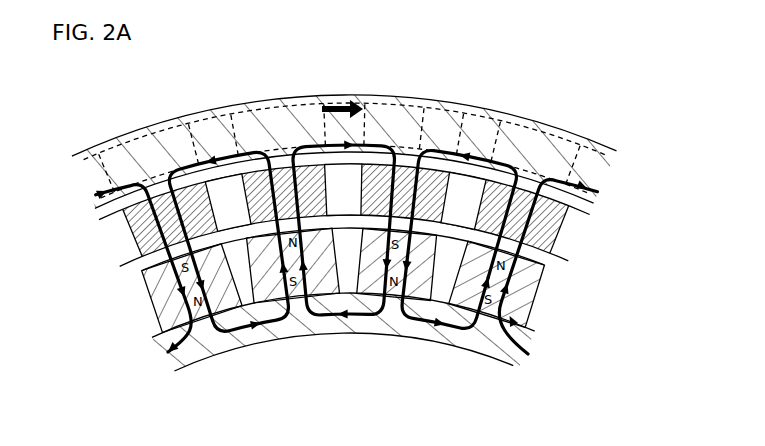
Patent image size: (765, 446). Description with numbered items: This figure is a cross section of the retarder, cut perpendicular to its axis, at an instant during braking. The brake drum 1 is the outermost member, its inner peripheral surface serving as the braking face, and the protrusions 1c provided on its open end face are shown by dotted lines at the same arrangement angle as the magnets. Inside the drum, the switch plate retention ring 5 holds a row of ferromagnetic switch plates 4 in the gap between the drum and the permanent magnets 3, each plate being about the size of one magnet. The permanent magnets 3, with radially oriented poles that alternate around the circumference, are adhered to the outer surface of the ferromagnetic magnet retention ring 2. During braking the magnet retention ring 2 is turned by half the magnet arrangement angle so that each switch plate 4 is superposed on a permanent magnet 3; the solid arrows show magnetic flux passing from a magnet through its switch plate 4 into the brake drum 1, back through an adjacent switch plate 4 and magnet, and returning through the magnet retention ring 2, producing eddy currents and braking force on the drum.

The brake drum 1 is at (612, 144).
The protrusions 1c is at (248, 101).
The magnet retention ring 2 is at (400, 328).
The permanent magnets 3 is at (157, 295).
The switch plates 4 is at (133, 234).
The switch plate retention ring 5 is at (560, 262).